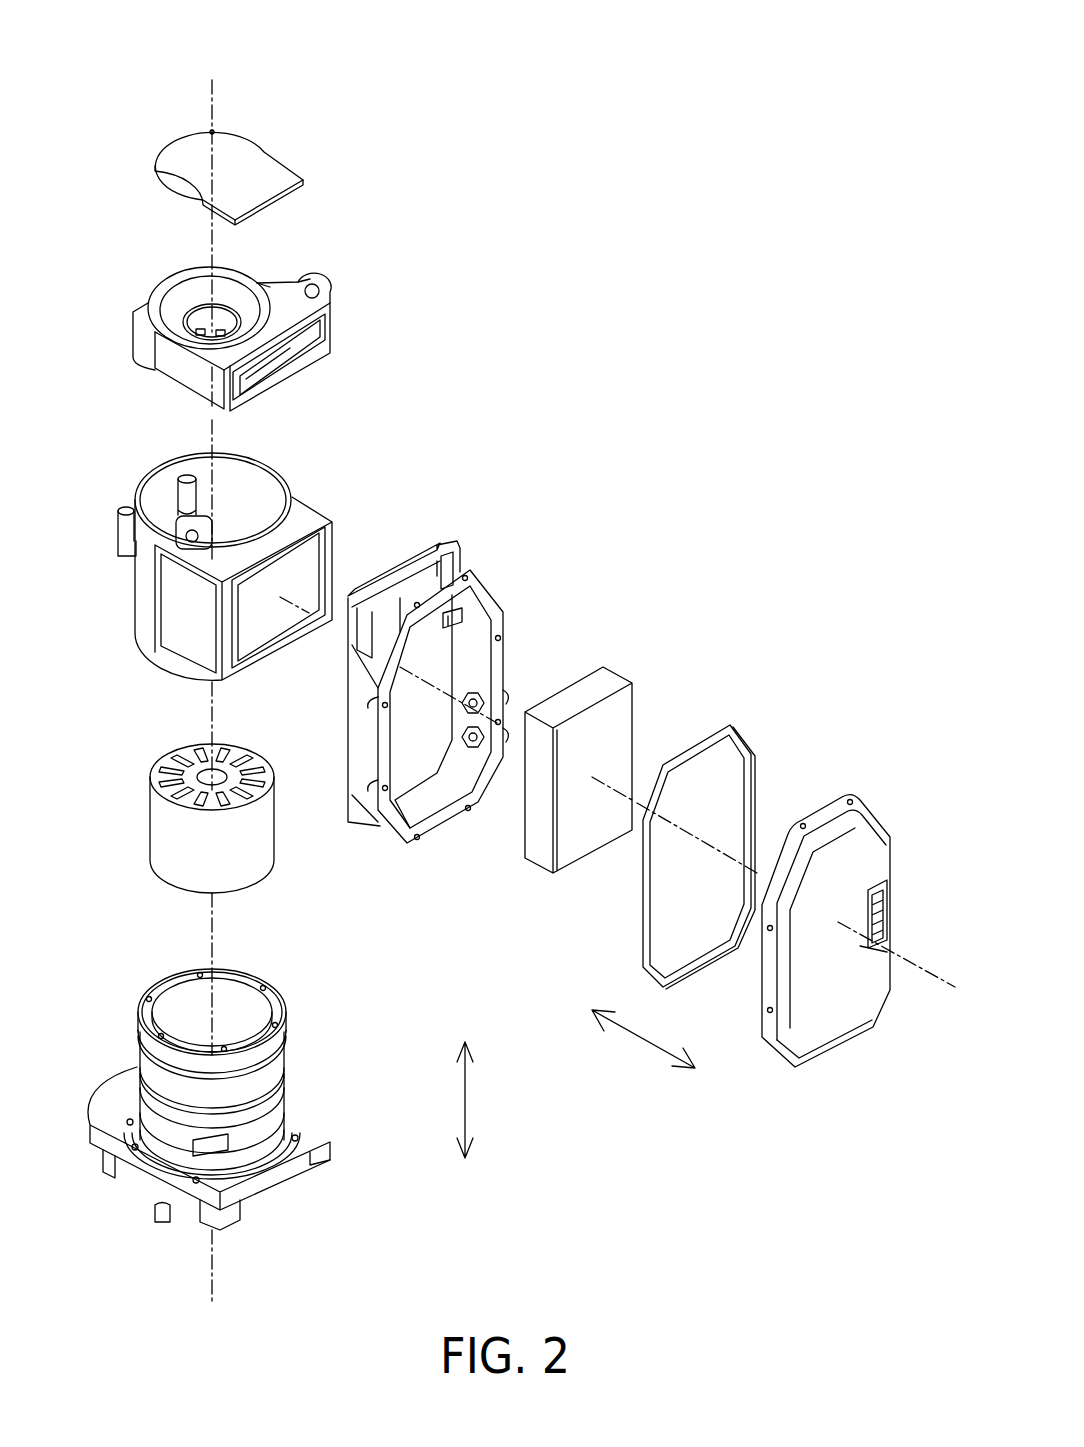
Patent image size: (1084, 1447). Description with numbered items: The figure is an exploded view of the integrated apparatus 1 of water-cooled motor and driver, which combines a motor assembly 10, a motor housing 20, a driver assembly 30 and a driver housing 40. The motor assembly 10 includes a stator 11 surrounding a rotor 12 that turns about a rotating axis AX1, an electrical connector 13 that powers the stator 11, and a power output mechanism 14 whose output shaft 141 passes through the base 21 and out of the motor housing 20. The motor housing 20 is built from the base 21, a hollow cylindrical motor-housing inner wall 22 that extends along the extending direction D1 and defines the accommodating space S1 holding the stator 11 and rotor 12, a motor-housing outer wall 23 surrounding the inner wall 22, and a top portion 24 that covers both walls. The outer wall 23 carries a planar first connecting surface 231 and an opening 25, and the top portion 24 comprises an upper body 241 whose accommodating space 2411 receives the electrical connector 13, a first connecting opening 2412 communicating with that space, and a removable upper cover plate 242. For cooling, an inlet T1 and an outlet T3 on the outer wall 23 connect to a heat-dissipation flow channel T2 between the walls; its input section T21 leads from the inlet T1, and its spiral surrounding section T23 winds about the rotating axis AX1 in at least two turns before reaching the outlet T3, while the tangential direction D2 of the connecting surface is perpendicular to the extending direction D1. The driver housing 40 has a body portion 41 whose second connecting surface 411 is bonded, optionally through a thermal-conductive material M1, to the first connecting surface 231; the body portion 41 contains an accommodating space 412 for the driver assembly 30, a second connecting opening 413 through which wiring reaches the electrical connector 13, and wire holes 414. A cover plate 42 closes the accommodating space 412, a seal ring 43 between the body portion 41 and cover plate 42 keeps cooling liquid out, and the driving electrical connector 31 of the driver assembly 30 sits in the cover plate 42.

The integrated apparatus of water-cooled motor and driver 1 is at (103, 17).
The rotating axis AX1 is at (210, 677).
The motor assembly 10 is at (160, 789).
The stator 11 is at (187, 752).
The rotor 12 is at (174, 770).
The electrical connector 13 is at (187, 315).
The power output mechanism 14 is at (138, 1249).
The output shaft 141 is at (163, 1223).
The motor housing 20 is at (858, 220).
The base 21 is at (234, 1180).
The motor-housing inner wall 22 is at (247, 1105).
The motor-housing outer wall 23 is at (219, 543).
The first connecting surface 231 is at (225, 653).
The top portion 24 is at (283, 291).
The upper body 241 is at (142, 352).
The accommodating space 2411 is at (273, 278).
The first connecting opening 2412 is at (288, 358).
The upper cover plate 242 is at (176, 162).
The opening of housing 25 is at (330, 322).
The driver assembly 30 is at (610, 730).
The driving electrical connector 31 is at (892, 915).
The driver housing 40 is at (692, 625).
The body portion 41 is at (478, 640).
The second connecting surface 411 is at (402, 565).
The accommodating space 412 is at (463, 645).
The second connecting opening 413 is at (447, 552).
The wire hole 414 is at (505, 695).
The cover plate 42 is at (856, 840).
The seal ring 43 is at (750, 747).
The accommodating space S1 is at (180, 1010).
The inlet T1 is at (126, 531).
The heat-dissipation flow channel T2 is at (281, 1100).
The input section T21 is at (214, 1148).
The surrounding section T23 is at (244, 1102).
The outlet T3 is at (167, 488).
The thermal-conductive material M1 is at (303, 570).
The extending direction D1 is at (483, 1100).
The tangential direction D2 is at (643, 1043).